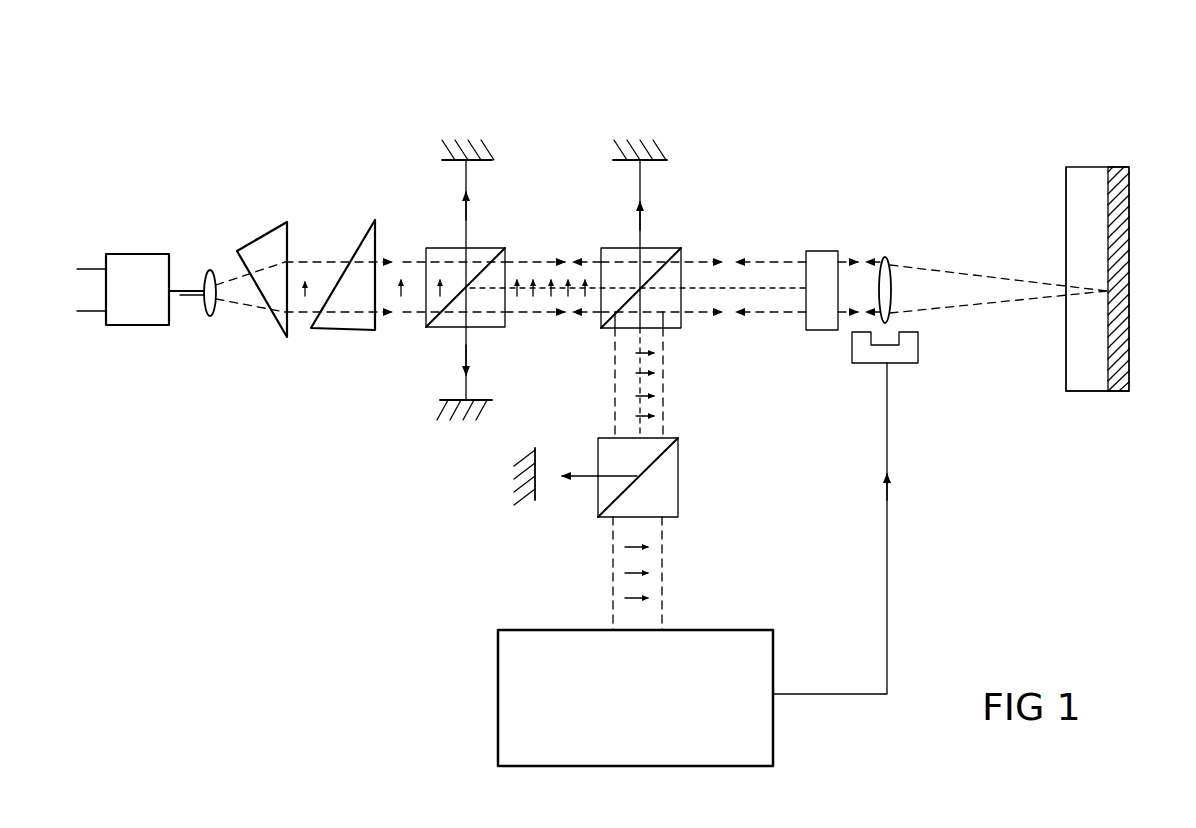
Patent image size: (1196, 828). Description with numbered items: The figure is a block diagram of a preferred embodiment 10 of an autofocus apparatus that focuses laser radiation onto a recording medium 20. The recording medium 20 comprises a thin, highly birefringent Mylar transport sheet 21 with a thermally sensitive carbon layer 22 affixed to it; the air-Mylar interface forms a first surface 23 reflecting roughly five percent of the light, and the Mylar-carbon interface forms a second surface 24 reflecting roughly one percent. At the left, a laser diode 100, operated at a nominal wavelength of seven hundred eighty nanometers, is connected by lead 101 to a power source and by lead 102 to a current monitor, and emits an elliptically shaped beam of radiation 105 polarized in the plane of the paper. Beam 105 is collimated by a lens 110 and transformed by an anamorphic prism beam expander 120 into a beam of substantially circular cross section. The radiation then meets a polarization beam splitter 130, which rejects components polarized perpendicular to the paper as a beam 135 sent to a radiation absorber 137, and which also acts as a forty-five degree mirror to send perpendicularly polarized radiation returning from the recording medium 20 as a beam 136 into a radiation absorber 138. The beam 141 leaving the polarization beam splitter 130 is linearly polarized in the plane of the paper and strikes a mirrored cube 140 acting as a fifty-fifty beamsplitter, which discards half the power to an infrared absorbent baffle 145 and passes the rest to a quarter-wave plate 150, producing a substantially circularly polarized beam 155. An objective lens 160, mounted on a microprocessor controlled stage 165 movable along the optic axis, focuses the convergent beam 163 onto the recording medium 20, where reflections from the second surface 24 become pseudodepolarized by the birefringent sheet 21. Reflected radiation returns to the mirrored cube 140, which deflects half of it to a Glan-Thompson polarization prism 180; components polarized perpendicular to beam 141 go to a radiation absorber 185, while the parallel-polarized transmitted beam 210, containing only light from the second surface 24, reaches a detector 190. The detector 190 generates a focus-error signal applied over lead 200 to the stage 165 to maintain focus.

The autofocus apparatus 10 is at (792, 132).
The recording medium 20 is at (1133, 160).
The transport sheet 21 is at (1088, 392).
The thermally sensitive carbon layer 22 is at (1114, 392).
The first surface 23 is at (1066, 242).
The second surface 24 is at (1110, 222).
The laser diode 100 is at (130, 327).
The lead 101 is at (91, 268).
The lead 102 is at (92, 311).
The beam of radiation 105 is at (201, 296).
The lens 110 is at (208, 272).
The anamorphic prism beam expander 120 is at (213, 343).
The polarization beam splitter 130 is at (484, 328).
The beam 135 is at (468, 172).
The beam 136 is at (466, 387).
The radiation absorber 137 is at (540, 130).
The radiation absorber 138 is at (442, 409).
The mirrored cube 140 is at (680, 251).
The beam 141 is at (517, 259).
The infrared absorbent baffle 145 is at (652, 150).
The quarter-wave plate 150 is at (827, 331).
The beam 155 is at (858, 258).
The objective lens 160 is at (888, 258).
The beam 163 is at (979, 276).
The microprocessor controlled stage 165 is at (913, 363).
The polarization prism 180 is at (678, 476).
The radiation absorber 185 is at (527, 500).
The detector 190 is at (773, 652).
The lead 200 is at (886, 458).
The transmitted beam 210 is at (662, 585).